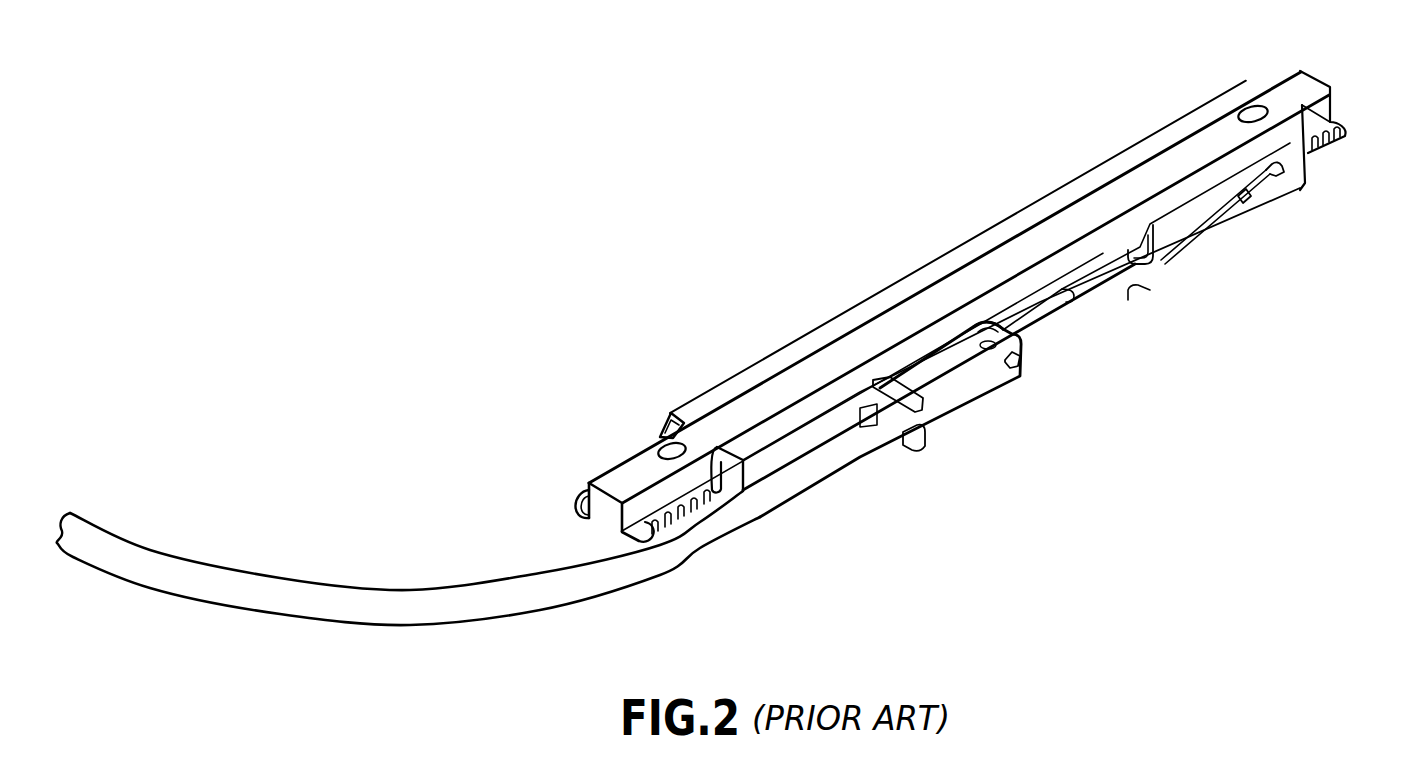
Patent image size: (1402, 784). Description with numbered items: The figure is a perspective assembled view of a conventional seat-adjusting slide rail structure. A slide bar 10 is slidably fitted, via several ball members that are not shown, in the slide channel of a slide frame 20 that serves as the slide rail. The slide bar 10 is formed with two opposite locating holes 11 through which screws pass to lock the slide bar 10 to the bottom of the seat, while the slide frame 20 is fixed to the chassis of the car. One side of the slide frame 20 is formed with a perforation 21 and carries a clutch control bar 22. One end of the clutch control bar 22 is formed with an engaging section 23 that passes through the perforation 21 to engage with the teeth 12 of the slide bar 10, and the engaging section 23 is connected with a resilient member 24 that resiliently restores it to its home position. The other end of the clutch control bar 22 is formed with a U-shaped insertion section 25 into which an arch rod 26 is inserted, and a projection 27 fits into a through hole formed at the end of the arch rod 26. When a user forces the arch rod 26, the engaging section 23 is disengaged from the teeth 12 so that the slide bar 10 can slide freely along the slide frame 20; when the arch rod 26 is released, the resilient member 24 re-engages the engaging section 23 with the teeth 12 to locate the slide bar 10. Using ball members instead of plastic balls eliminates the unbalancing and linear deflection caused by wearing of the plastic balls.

The slide bar 10 is at (990, 265).
The locating hole 11 is at (672, 449).
The teeth 12 is at (681, 513).
The slide frame 20 is at (860, 300).
The perforation 21 is at (1050, 285).
The clutch control bar 22 is at (1072, 314).
The engaging section 23 is at (1130, 283).
The resilient member 24 is at (1203, 238).
The U-shaped insertion section 25 is at (912, 452).
The arch rod 26 is at (612, 578).
The projection 27 is at (1018, 366).